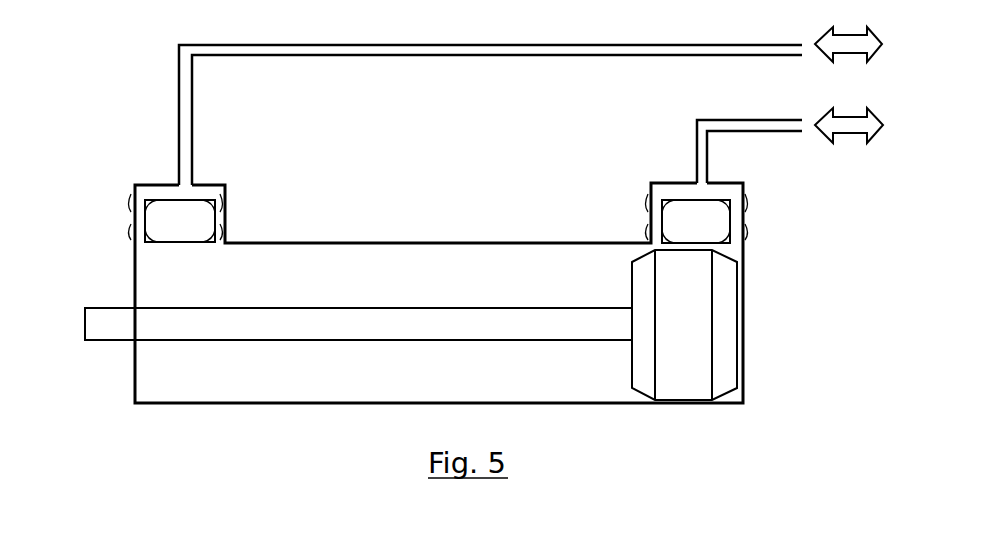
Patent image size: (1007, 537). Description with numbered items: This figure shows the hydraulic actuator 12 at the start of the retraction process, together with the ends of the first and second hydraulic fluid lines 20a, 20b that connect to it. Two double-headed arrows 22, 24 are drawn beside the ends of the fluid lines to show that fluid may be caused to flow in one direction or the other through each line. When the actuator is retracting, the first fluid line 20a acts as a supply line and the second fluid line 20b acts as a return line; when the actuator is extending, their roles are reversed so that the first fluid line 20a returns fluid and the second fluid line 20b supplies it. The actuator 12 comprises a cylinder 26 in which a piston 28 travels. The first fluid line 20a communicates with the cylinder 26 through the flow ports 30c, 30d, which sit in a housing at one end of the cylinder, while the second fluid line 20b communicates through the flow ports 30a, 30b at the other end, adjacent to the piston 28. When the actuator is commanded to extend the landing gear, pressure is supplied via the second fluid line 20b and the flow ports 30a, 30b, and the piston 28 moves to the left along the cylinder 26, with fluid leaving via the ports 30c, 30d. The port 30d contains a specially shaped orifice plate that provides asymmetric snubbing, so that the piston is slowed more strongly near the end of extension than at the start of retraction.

The actuator 12 is at (203, 436).
The first hydraulic fluid line 20a is at (412, 48).
The second hydraulic fluid line 20b is at (703, 158).
The double-headed arrow 22 is at (880, 47).
The double-headed arrow 24 is at (872, 128).
The cylinder 26 is at (345, 415).
The piston 28 is at (727, 325).
The flow port 30a is at (653, 224).
The flow port 30b is at (740, 217).
The flow port 30c is at (227, 215).
The flow port 30d is at (136, 222).